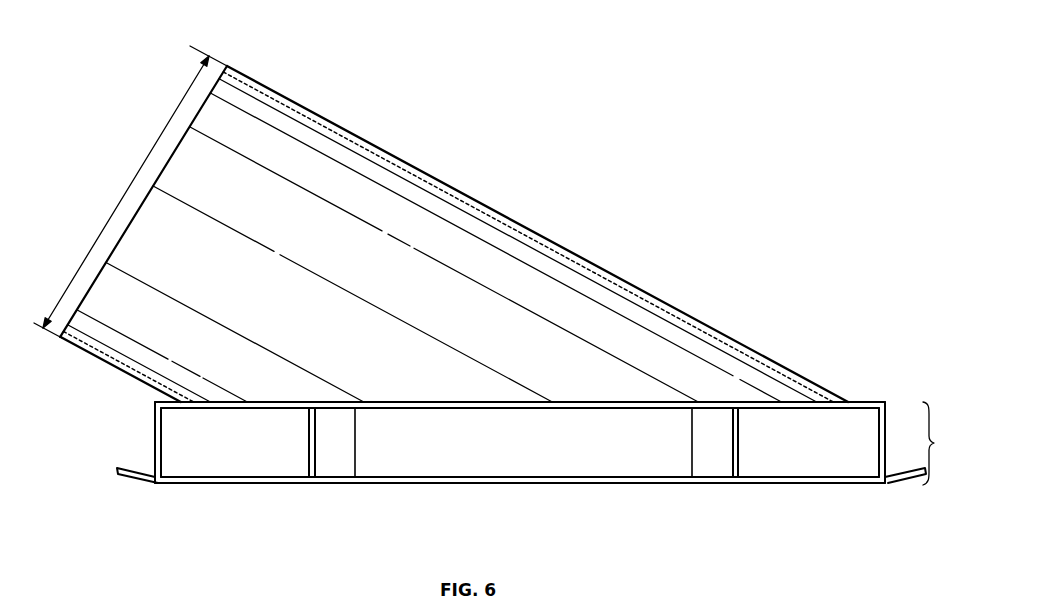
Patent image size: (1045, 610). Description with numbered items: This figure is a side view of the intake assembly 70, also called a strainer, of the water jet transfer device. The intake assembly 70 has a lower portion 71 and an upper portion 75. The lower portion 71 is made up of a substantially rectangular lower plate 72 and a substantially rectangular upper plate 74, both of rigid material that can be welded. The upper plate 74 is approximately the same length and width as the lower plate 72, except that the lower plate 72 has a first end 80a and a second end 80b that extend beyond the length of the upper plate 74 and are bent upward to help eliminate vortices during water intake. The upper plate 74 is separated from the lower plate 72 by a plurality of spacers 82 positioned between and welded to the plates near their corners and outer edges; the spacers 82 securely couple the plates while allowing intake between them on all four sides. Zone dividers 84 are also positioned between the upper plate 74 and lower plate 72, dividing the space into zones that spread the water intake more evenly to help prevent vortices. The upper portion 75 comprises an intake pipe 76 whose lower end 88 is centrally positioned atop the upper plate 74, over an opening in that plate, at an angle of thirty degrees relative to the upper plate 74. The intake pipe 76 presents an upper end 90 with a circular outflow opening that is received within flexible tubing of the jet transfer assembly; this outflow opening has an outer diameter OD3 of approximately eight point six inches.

The intake assembly 70 is at (758, 205).
The lower portion 71 is at (412, 155).
The lower plate 72 is at (778, 484).
The upper plate 74 is at (868, 402).
The upper portion 75 is at (931, 428).
The intake pipe 76 is at (278, 122).
The first end 80a is at (900, 484).
The second end 80b is at (133, 477).
The spacers 82 is at (155, 432).
The zone dividers 84 is at (345, 453).
The lower end 88 is at (792, 372).
The upper end 90 is at (229, 67).
The outer diameter OD3 is at (136, 178).